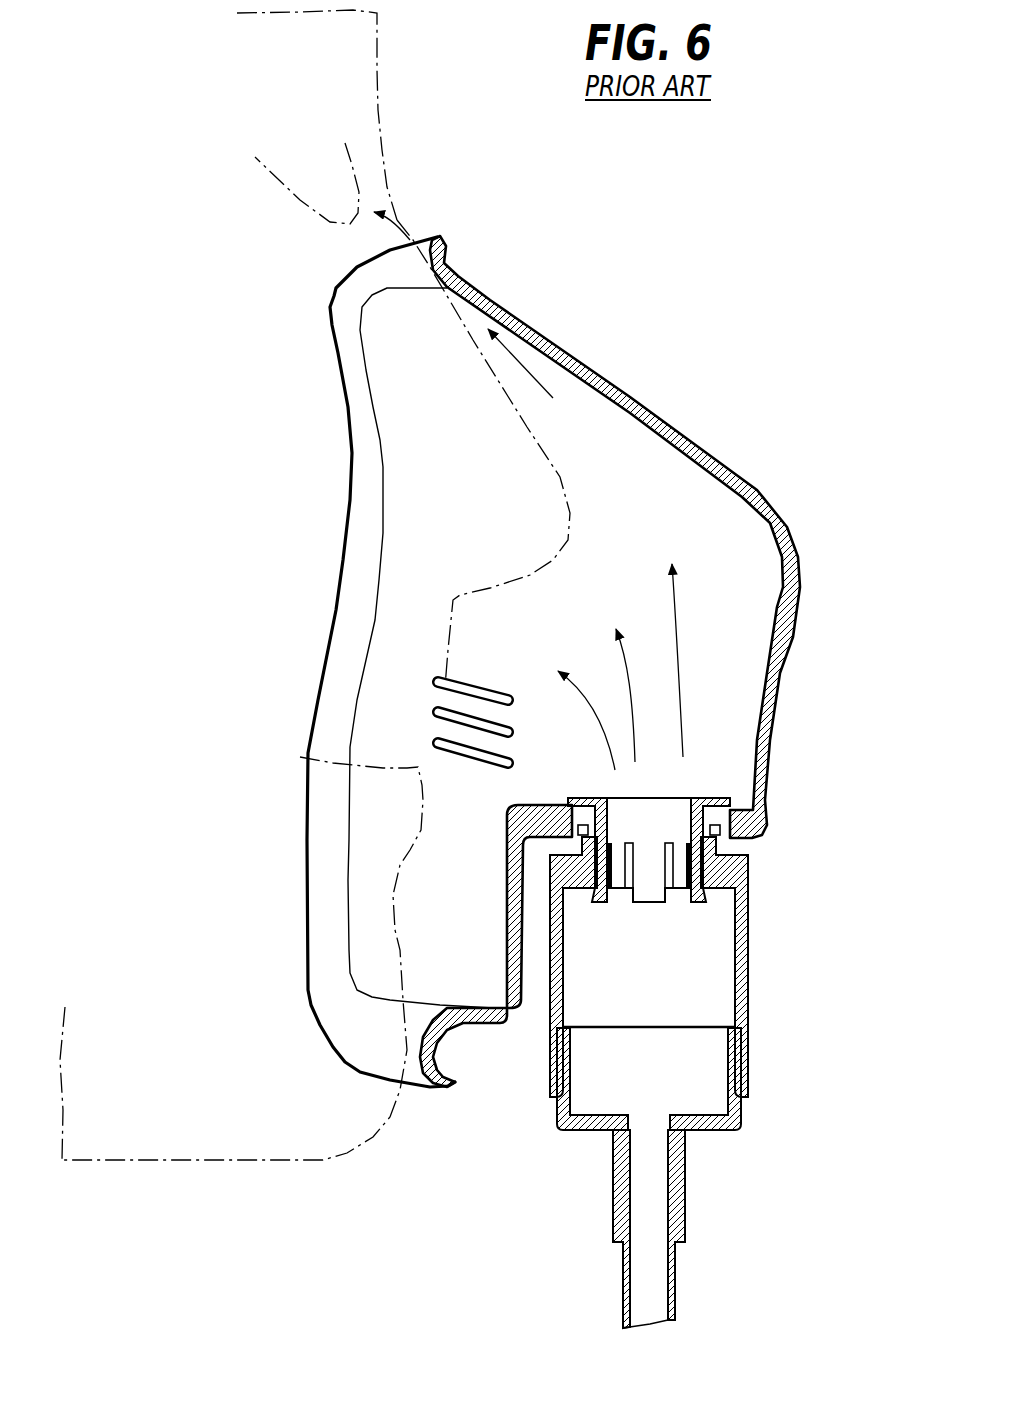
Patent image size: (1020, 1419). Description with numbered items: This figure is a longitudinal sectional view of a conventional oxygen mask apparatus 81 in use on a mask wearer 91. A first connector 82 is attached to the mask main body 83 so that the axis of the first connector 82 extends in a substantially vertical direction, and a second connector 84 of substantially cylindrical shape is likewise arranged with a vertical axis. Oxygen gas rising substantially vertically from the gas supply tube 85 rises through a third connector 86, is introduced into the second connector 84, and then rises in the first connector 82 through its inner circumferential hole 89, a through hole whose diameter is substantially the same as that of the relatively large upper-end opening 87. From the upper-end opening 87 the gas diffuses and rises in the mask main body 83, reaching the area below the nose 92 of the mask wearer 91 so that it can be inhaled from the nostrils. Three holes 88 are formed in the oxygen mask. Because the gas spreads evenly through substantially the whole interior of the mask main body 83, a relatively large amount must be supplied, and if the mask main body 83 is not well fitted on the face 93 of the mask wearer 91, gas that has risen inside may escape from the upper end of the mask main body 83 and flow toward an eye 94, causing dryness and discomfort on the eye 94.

The conventional oxygen mask apparatus 81 is at (610, 661).
The first connector 82 is at (700, 800).
The mask main body 83 is at (741, 455).
The second connector 84 is at (748, 915).
The gas supply tube 85 is at (672, 1284).
The third connector 86 is at (724, 1125).
The upper-end opening 87 is at (578, 797).
The three holes 88 is at (505, 755).
The inner circumferential hole 89 is at (660, 835).
The mask wearer 91 is at (392, 75).
The nose 92 is at (565, 480).
The face 93 is at (305, 322).
The eye 94 is at (330, 224).